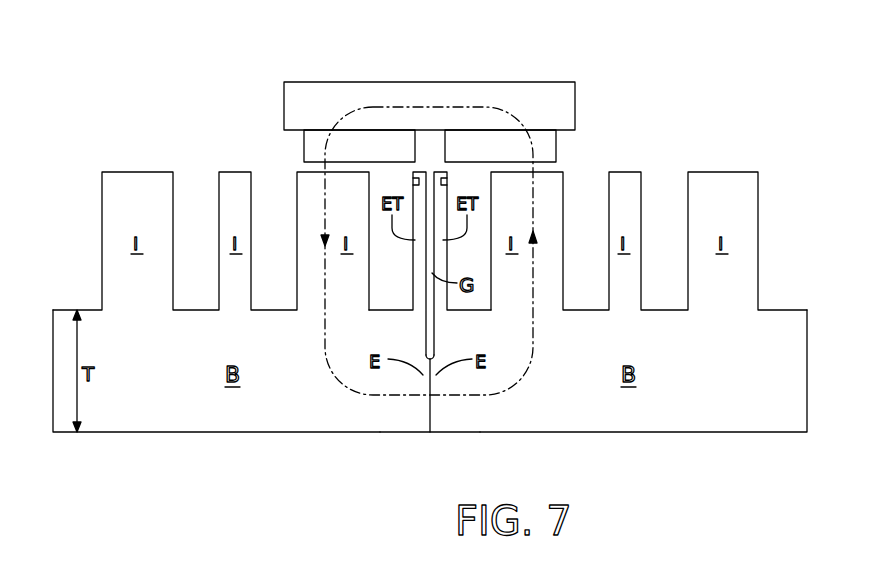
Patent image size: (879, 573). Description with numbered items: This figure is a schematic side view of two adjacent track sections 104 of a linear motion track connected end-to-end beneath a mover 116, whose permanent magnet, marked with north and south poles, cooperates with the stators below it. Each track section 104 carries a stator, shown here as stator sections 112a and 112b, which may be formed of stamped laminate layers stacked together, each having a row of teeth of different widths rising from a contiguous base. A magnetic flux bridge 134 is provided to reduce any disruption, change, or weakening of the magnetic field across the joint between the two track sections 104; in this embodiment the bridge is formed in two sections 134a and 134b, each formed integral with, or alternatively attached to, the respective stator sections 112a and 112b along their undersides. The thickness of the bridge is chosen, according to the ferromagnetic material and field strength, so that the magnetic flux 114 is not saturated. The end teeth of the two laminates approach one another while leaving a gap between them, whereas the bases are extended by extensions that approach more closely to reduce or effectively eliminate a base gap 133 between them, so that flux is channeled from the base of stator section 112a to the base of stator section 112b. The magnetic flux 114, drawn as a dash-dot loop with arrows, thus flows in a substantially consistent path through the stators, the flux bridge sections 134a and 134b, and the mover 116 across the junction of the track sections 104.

The track section 104 is at (190, 161).
The first stator section 112a is at (235, 433).
The second stator section 112b is at (629, 433).
The magnetic flux 114 is at (352, 113).
The mover 116 is at (485, 48).
The base gap 133 is at (430, 405).
The magnetic flux bridge 134 is at (426, 468).
The first flux bridge section 134a is at (355, 433).
The second flux bridge section 134b is at (505, 433).